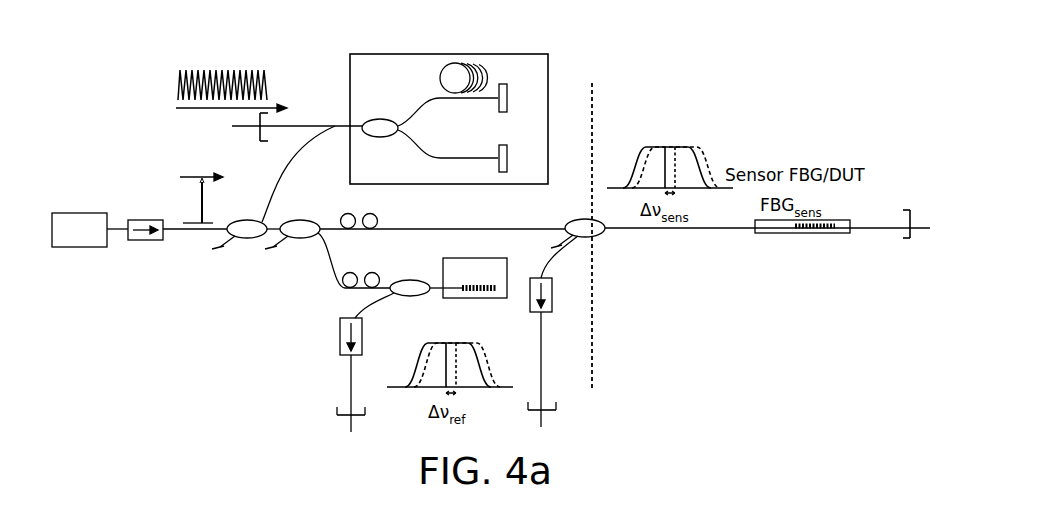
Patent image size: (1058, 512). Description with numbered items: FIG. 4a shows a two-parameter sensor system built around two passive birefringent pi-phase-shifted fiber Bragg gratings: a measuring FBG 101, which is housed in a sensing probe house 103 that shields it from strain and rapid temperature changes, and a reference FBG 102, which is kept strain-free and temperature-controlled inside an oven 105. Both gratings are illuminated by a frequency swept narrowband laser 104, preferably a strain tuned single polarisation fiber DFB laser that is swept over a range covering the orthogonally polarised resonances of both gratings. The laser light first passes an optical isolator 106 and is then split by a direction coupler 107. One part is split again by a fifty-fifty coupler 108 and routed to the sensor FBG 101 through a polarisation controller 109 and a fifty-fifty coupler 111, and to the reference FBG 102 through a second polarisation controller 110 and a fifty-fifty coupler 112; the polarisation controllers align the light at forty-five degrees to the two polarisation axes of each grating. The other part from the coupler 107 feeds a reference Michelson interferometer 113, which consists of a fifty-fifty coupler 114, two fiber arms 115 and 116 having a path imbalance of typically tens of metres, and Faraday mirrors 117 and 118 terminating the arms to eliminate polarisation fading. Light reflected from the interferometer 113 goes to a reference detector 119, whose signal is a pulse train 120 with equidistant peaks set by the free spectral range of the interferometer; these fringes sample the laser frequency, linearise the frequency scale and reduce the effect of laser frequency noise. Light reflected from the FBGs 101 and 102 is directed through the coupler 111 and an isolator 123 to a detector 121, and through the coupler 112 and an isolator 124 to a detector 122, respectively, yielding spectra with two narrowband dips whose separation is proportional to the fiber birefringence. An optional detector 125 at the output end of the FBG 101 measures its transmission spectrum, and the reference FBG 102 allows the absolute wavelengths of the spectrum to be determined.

The Π-phase-shifted FBG 101 is at (808, 234).
The reference FBG 102 is at (470, 285).
The sensing probe house 103 is at (759, 235).
The frequency swept narrowband laser 104 is at (97, 240).
The oven 105 is at (508, 263).
The optical isolator 106 is at (146, 241).
The direction coupler 107 is at (243, 240).
The 50/50 coupler 108 is at (298, 240).
The polarisation controller 109 is at (341, 213).
The fiber loops 110 is at (380, 275).
The 50/50 coupler 111 is at (578, 219).
The 50/50 coupler 112 is at (406, 297).
The reference Michelson interferometer 113 is at (548, 58).
The 50/50 coupler 114 is at (380, 137).
The fiber arm 115 is at (420, 102).
The fiber arm 116 is at (410, 152).
The Faraday mirror 117 is at (498, 110).
The Faraday mirror 118 is at (503, 173).
The reference detector 119 is at (258, 142).
The pulse train 120 is at (232, 70).
The detector 121 is at (556, 411).
The detector 122 is at (337, 412).
The isolator 123 is at (543, 314).
The isolator 124 is at (340, 335).
The optional detector 125 is at (909, 240).